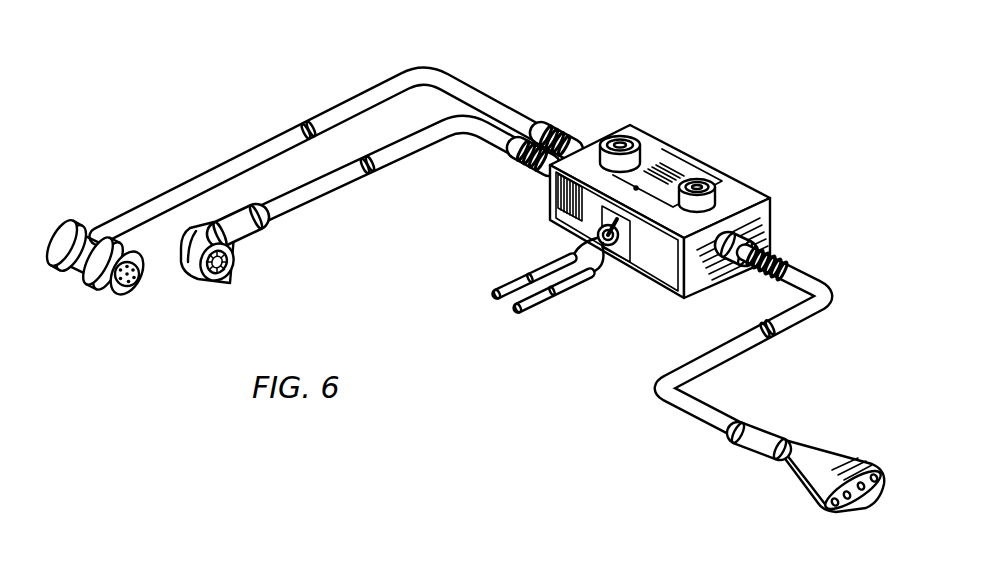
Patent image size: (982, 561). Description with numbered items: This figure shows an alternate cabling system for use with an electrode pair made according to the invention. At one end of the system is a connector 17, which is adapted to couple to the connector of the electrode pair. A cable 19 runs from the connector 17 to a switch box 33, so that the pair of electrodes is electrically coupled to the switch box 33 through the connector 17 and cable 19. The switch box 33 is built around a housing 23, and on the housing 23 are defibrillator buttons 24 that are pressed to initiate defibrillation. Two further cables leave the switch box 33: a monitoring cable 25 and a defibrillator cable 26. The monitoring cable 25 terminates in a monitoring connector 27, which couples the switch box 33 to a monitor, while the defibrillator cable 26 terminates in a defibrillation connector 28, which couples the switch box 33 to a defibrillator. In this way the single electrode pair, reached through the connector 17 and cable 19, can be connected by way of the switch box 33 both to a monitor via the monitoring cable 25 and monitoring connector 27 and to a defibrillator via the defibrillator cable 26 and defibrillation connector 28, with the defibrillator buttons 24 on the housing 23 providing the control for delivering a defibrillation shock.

The connector 17 is at (860, 458).
The cable 19 is at (826, 290).
The housing 23 is at (660, 141).
The defibrillator buttons 24 is at (620, 136).
The monitoring cable 25 is at (340, 104).
The defibrillator cable 26 is at (427, 146).
The monitoring connector 27 is at (232, 244).
The defibrillation connector 28 is at (87, 224).
The switch box 33 is at (667, 171).